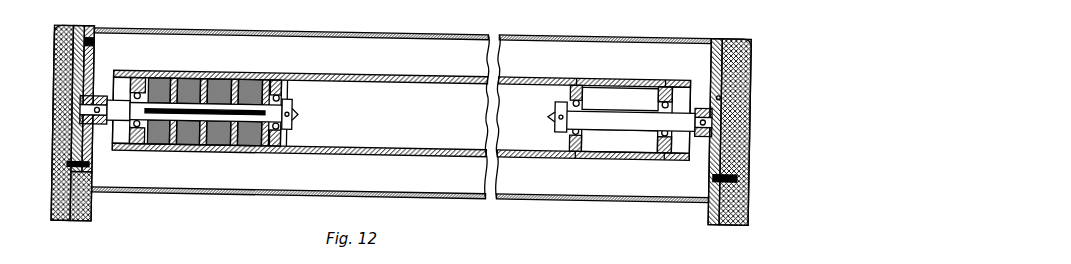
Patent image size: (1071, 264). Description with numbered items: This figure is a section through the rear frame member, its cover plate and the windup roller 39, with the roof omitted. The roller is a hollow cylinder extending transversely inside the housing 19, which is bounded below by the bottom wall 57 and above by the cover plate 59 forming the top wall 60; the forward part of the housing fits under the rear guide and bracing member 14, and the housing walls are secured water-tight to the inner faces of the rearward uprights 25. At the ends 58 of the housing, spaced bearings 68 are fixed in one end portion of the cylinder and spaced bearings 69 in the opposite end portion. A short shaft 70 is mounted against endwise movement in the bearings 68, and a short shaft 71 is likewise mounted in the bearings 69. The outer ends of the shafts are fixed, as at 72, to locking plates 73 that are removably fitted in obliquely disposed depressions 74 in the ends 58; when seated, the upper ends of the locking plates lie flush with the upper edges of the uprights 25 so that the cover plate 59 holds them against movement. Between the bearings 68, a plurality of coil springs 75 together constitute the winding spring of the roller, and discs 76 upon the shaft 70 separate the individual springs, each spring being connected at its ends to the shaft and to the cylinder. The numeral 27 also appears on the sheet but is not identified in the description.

The section line 14- 14 is at (227, 46).
The bottom plate 19 is at (602, 176).
The end wall 25 is at (55, 186).
The support 27 is at (95, 256).
The inner sleeve 39 is at (430, 77).
The casing bottom wall 57 is at (289, 186).
The flange 58 is at (93, 180).
The casing section 59 is at (640, 26).
The casing section 60 is at (416, 21).
The bearing 68 is at (139, 80).
The bearing 69 is at (573, 80).
The shaft 70 is at (246, 103).
The shaft 71 is at (636, 111).
The hub 72 is at (93, 109).
The end plate 73 is at (57, 70).
The liner plate 74 is at (57, 45).
The rotor element 75 is at (139, 146).
The partition 76 is at (175, 75).